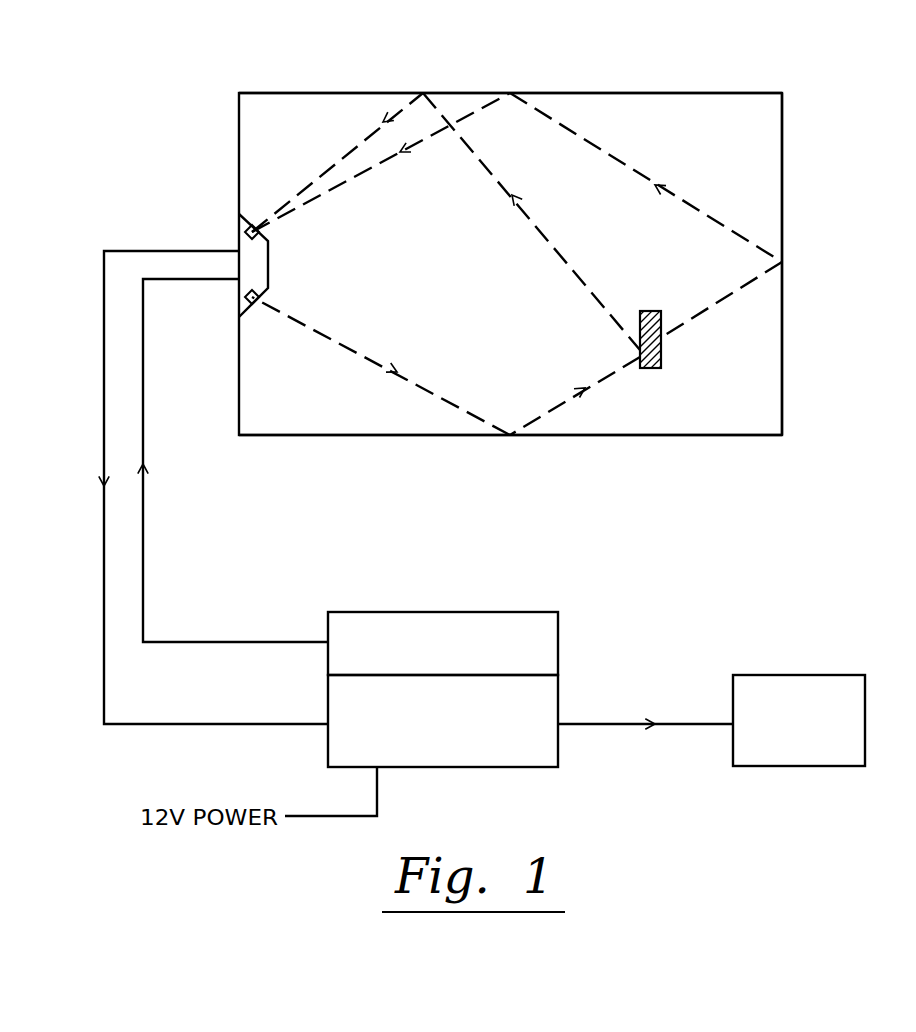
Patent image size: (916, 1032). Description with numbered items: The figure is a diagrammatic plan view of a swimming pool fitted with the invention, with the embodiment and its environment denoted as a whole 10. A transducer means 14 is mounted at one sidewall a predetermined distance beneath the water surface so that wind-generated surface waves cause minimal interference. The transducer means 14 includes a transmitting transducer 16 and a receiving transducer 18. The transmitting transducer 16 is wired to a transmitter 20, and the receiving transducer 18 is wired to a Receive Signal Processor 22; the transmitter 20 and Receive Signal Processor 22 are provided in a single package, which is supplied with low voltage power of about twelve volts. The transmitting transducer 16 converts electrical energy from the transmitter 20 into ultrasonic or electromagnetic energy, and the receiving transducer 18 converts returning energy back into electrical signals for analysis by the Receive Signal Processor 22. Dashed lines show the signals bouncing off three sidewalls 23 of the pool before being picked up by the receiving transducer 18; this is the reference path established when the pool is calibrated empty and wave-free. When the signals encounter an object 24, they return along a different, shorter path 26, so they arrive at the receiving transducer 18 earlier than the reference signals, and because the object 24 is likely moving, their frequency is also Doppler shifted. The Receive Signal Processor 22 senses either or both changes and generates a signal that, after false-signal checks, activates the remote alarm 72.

The illustrative embodiment and environment 10 is at (752, 70).
The transducer means 14 is at (287, 262).
The transmitting transducer 16 is at (268, 297).
The receiving transducer 18 is at (268, 232).
The transmitter 20 is at (452, 610).
The Receive Signal Processor 22 is at (500, 768).
The sidewalls 23 is at (615, 95).
The object 24 is at (661, 355).
The path 26 is at (552, 240).
The alarm 72 is at (755, 675).